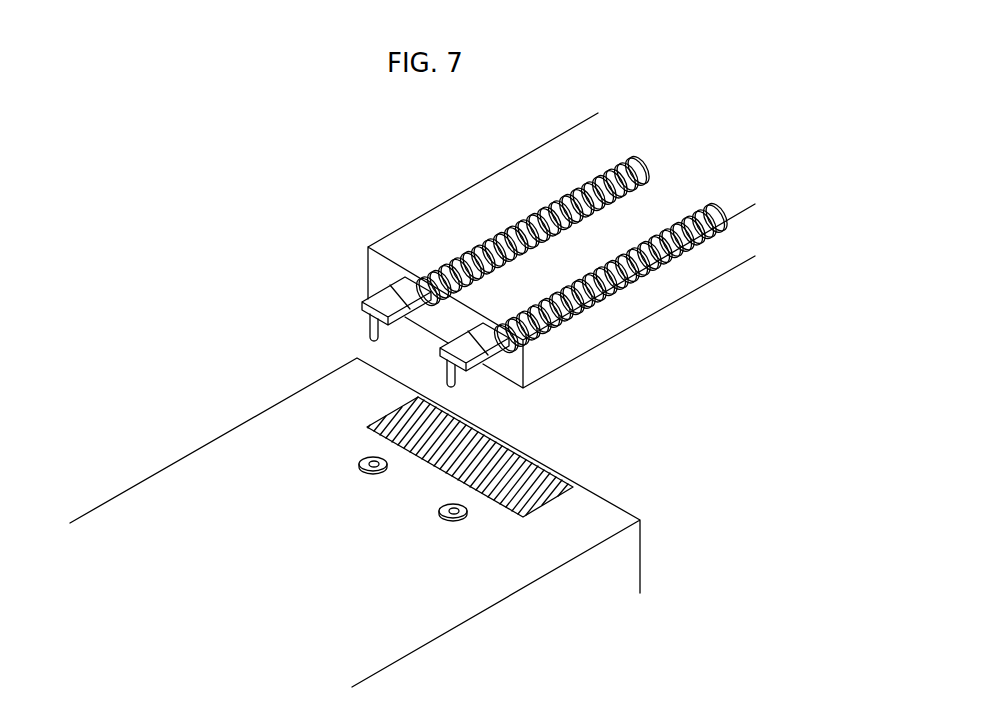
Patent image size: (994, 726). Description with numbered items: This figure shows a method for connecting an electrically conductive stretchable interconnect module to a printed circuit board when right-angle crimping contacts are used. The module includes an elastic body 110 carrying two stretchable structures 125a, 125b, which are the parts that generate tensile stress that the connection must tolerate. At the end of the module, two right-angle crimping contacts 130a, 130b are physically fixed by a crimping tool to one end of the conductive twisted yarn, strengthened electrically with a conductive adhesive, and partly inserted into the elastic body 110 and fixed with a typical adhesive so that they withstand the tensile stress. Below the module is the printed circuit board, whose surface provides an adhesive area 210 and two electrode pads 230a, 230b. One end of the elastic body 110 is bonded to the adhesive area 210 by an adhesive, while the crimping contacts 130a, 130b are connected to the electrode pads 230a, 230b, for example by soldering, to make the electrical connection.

The elastic body 110 is at (481, 173).
The stretchable structure 125a is at (636, 164).
The stretchable structure 125b is at (716, 208).
The crimping contact 130a is at (374, 302).
The crimping contact 130b is at (476, 364).
The adhesive area 210 is at (545, 484).
The electrode pad 230a is at (357, 467).
The electrode pad 230b is at (438, 512).